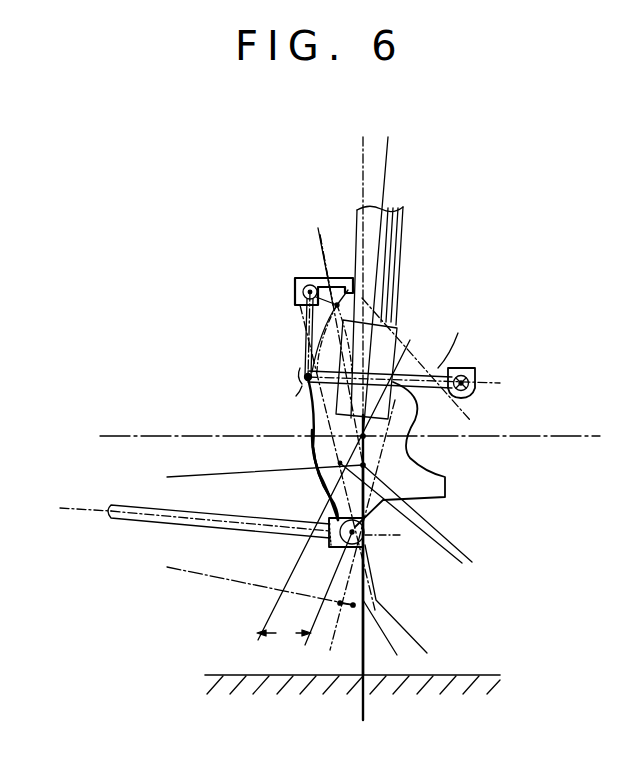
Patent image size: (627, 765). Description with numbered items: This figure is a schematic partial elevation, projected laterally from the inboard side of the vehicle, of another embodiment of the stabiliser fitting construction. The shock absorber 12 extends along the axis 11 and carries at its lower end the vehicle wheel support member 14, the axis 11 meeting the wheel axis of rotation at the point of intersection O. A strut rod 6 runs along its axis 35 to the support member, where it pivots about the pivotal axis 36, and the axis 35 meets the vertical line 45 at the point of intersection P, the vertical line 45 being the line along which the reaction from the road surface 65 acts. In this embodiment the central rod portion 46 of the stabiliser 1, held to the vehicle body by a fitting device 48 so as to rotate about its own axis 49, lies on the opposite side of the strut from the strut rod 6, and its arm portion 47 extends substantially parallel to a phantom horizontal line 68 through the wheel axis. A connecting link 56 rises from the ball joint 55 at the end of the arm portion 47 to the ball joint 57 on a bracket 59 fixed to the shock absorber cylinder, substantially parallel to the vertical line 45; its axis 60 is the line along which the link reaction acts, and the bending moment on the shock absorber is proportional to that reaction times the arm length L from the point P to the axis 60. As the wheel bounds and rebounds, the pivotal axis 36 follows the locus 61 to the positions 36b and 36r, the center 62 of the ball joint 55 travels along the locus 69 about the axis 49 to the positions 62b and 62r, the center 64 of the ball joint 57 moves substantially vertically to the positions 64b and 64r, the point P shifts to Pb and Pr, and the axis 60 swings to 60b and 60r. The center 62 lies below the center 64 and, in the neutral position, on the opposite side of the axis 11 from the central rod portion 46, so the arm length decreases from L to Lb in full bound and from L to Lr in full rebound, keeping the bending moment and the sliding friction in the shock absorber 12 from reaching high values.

The stabiliser 1 is at (455, 337).
The strut rod 6 is at (169, 523).
The axis 11 is at (389, 173).
The shock absorber 12 is at (402, 250).
The vehicle wheel support member 14 is at (450, 494).
The axis of the strut rod 35 is at (93, 503).
The pivotal axis 36 is at (341, 549).
The position of the axis 36 at maximum bound 36b is at (318, 480).
The position of the axis 36 at maximum rebound 36r is at (340, 606).
The vertical line 45 is at (367, 710).
The central rod portion 46 is at (468, 393).
The arm portion 47 is at (397, 371).
The fitting device 48 is at (468, 368).
The axis 49 is at (478, 382).
The ball joint 55 is at (300, 380).
The connecting link 56 is at (305, 348).
The ball joint 57 is at (296, 279).
The bracket 59 is at (318, 279).
The axis of the connecting link 60 is at (318, 515).
The position of the axis 60 at maximum bound 60b is at (327, 262).
The position of the axis 60 at maximum rebound 60r is at (365, 574).
The locus 61 is at (340, 618).
The center of the ball joint 55 62 is at (306, 394).
The position of the center 62 at maximum bound 62b is at (363, 300).
The position of the center 62 at maximum rebound 62r is at (313, 448).
The center of the ball joint 57 64 is at (302, 292).
The position of the center 64 at maximum bound 64b is at (318, 228).
The position of the center 64 at maximum rebound 64r is at (304, 378).
The road surface 65 is at (227, 674).
The phantom horizontal line 68 is at (580, 434).
The locus 69 is at (308, 322).
The point of intersection O is at (365, 438).
The point of intersection P is at (365, 537).
The position of point P at maximum bound Pb is at (372, 468).
The position of point P at maximum rebound Pr is at (353, 608).
The arm length of the bending moment L is at (284, 634).
The arm length at maximum bound Lb is at (432, 553).
The arm length at maximum rebound Lr is at (389, 656).